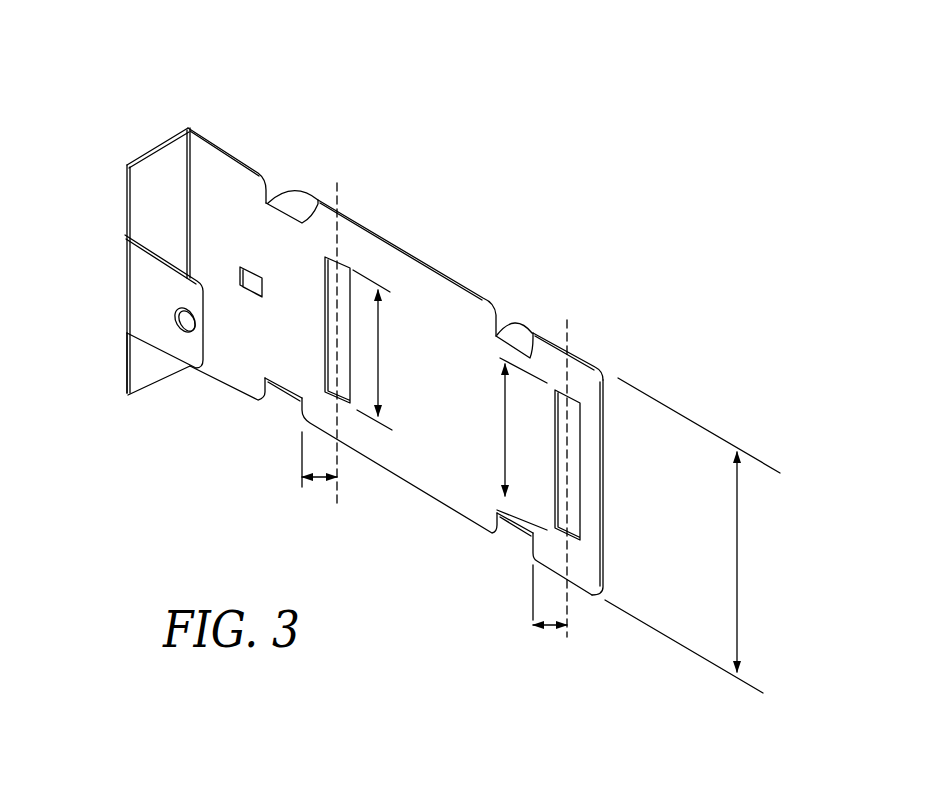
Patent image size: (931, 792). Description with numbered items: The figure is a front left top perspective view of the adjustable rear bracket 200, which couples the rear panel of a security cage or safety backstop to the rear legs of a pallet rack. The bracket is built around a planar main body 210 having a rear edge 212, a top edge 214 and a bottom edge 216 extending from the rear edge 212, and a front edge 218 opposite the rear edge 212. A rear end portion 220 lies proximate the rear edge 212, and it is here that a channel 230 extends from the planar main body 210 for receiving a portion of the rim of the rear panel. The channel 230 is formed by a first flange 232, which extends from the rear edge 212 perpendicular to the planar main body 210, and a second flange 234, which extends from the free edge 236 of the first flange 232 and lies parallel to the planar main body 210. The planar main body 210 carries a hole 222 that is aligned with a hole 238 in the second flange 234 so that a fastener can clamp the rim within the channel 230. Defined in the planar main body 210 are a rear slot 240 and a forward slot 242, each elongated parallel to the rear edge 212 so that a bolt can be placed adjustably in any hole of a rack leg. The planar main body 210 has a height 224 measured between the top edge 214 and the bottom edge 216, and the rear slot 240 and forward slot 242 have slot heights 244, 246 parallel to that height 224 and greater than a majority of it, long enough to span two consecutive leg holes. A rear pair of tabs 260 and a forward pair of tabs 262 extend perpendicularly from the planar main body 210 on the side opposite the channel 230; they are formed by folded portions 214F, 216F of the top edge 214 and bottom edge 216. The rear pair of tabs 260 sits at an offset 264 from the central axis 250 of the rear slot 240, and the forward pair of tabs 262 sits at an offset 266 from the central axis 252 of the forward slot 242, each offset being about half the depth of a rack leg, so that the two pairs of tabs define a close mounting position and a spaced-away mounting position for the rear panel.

The adjustable rear bracket 200 is at (429, 367).
The planar main body 210 is at (497, 380).
The rear edge 212 is at (190, 126).
The top edge 214 is at (460, 277).
The folded portion of the top edge 214F is at (282, 184).
The bottom edge 216 is at (393, 483).
The folded portion of the bottom edge 216F is at (284, 403).
The front edge 218 is at (606, 493).
The rear end portion 220 is at (131, 247).
The hole 222 is at (249, 266).
The height 224 is at (738, 569).
The channel 230 is at (170, 166).
The first flange 232 is at (123, 198).
The second flange 234 is at (146, 302).
The free edge 236 is at (125, 368).
The hole 238 is at (187, 333).
The rear slot 240 is at (344, 264).
The forward slot 242 is at (573, 397).
The slot height 244 is at (378, 350).
The slot height 246 is at (505, 440).
The central axis 250 is at (337, 190).
The central axis 252 is at (567, 331).
The rear pair of tabs 260 is at (302, 190).
The forward pair of tabs 262 is at (529, 330).
The offset 264 is at (316, 476).
The offset 266 is at (547, 629).